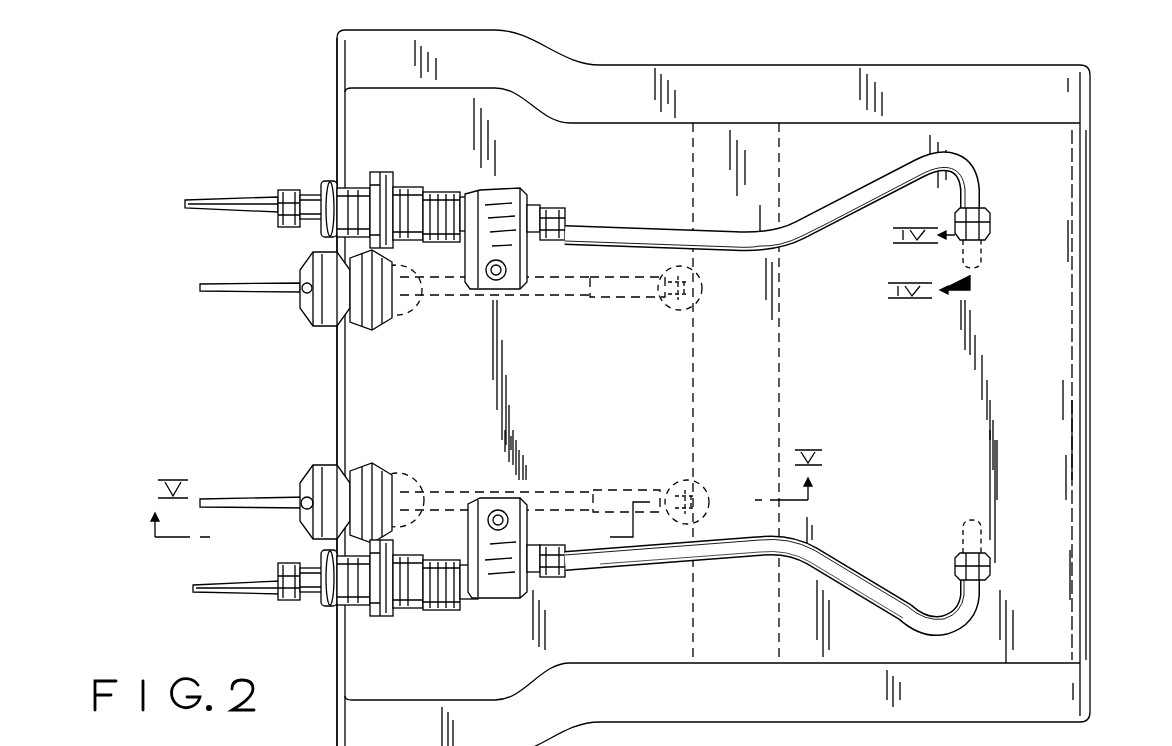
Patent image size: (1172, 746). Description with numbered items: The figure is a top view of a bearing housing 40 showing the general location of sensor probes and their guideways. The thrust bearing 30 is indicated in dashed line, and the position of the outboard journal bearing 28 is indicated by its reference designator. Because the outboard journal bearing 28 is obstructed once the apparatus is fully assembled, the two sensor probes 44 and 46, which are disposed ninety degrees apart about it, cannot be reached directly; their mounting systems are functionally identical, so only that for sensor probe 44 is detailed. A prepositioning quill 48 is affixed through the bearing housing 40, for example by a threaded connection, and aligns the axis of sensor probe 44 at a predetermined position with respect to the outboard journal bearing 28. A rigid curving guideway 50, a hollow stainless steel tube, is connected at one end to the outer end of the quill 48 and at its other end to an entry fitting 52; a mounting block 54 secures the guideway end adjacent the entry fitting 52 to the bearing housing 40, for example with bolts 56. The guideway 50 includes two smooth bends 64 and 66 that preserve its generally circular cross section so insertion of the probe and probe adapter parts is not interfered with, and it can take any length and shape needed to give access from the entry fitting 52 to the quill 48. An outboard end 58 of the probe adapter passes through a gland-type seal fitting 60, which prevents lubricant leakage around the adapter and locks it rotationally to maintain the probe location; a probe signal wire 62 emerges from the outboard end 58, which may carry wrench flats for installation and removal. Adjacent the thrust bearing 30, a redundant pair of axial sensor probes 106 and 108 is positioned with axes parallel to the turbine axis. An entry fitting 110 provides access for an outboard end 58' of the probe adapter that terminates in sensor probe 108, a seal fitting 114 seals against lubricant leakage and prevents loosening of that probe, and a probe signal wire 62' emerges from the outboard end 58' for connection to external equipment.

The outboard journal bearing 28 is at (1030, 140).
The thrust bearing 30 is at (745, 135).
The bearing housing 40 is at (1050, 168).
The sensor probe 44 is at (985, 266).
The sensor probe 46 is at (985, 525).
The prepositioning quill 48 is at (985, 235).
The rigid curving guideway 50 is at (848, 228).
The entry fitting 52 is at (412, 185).
The mounting block 54 is at (515, 200).
The bolts 56 is at (500, 282).
The outboard end 58 is at (288, 185).
The gland-type seal fitting 60 is at (322, 185).
The probe signal wire 62 is at (231, 177).
The smooth bend 64 is at (975, 185).
The smooth bend 66 is at (800, 250).
The sensor probe 106 is at (702, 294).
The sensor probe 108 is at (703, 493).
The entry fitting 110 is at (376, 463).
The seal fitting 114 is at (330, 464).
The probe signal wire 62' is at (247, 462).
The outboard end 58' is at (280, 474).